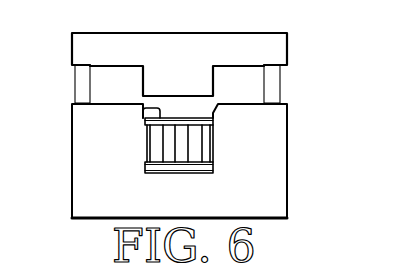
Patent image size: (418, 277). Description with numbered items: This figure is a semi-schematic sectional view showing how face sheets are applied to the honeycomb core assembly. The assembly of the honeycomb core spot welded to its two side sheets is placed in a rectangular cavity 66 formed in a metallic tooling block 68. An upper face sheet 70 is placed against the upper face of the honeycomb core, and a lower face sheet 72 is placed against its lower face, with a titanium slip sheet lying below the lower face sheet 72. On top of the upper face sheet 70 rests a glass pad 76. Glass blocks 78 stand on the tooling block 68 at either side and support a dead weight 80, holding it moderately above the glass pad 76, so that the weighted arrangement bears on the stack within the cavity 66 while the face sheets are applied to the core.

The rectangular cavity 66 is at (148, 148).
The metallic tooling block 68 is at (75, 198).
The upper face sheet 70 is at (212, 128).
The lower face sheet 72 is at (213, 164).
The glass pad 76 is at (146, 106).
The glass blocks 78 is at (78, 82).
The dead weight 80 is at (170, 38).